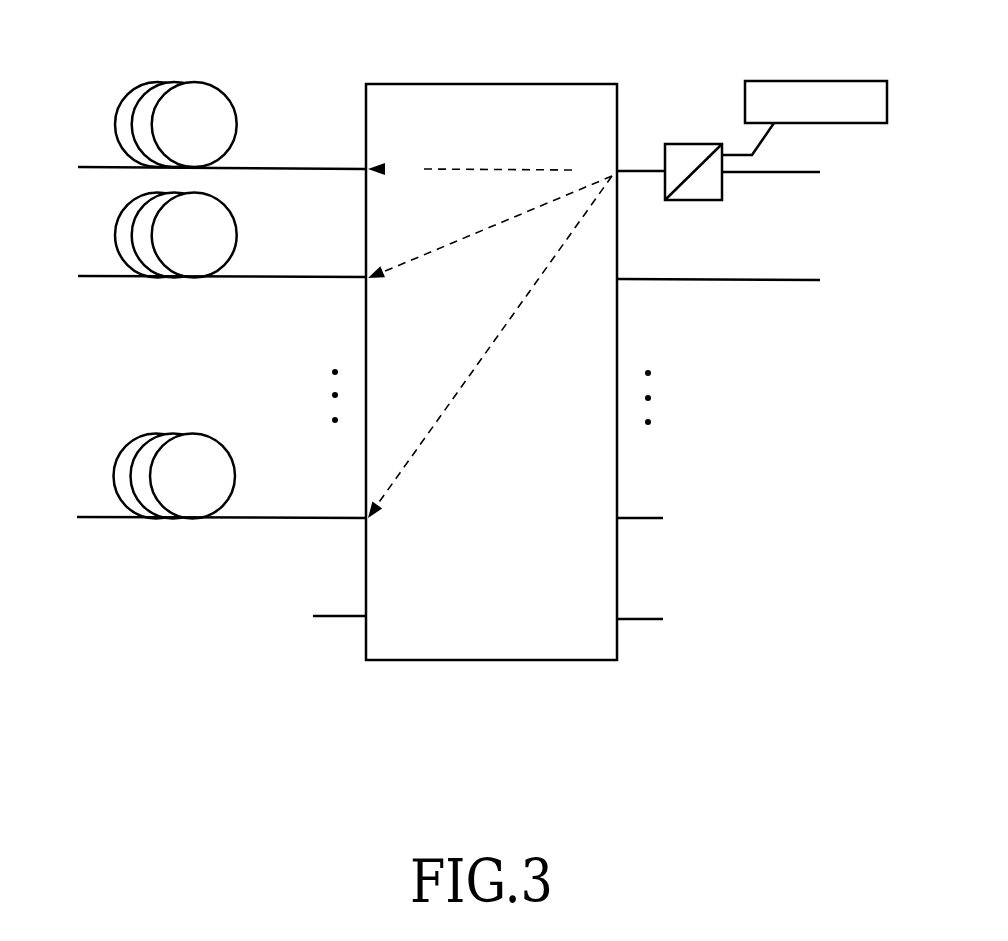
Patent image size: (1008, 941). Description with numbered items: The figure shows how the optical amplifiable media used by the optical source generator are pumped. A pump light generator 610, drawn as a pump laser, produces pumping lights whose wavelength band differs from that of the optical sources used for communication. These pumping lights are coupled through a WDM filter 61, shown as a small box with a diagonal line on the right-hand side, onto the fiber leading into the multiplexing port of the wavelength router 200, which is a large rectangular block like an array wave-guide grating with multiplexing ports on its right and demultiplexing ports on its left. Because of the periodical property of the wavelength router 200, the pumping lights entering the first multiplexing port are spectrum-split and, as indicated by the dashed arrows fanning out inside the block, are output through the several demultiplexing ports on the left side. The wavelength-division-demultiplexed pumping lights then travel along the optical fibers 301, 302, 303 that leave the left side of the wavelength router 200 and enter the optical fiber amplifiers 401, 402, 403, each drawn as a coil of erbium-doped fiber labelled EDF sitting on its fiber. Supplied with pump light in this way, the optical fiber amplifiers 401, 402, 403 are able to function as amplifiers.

The wavelength router 200 is at (493, 84).
The optical fiber 301 is at (265, 167).
The optical fiber 302 is at (265, 277).
The optical fiber 303 is at (263, 518).
The optical fiber amplifier 401 is at (184, 82).
The optical fiber amplifier 402 is at (231, 208).
The optical fiber amplifier 403 is at (182, 435).
The WDM filter 61 is at (706, 222).
The pump light generator 610 is at (773, 81).